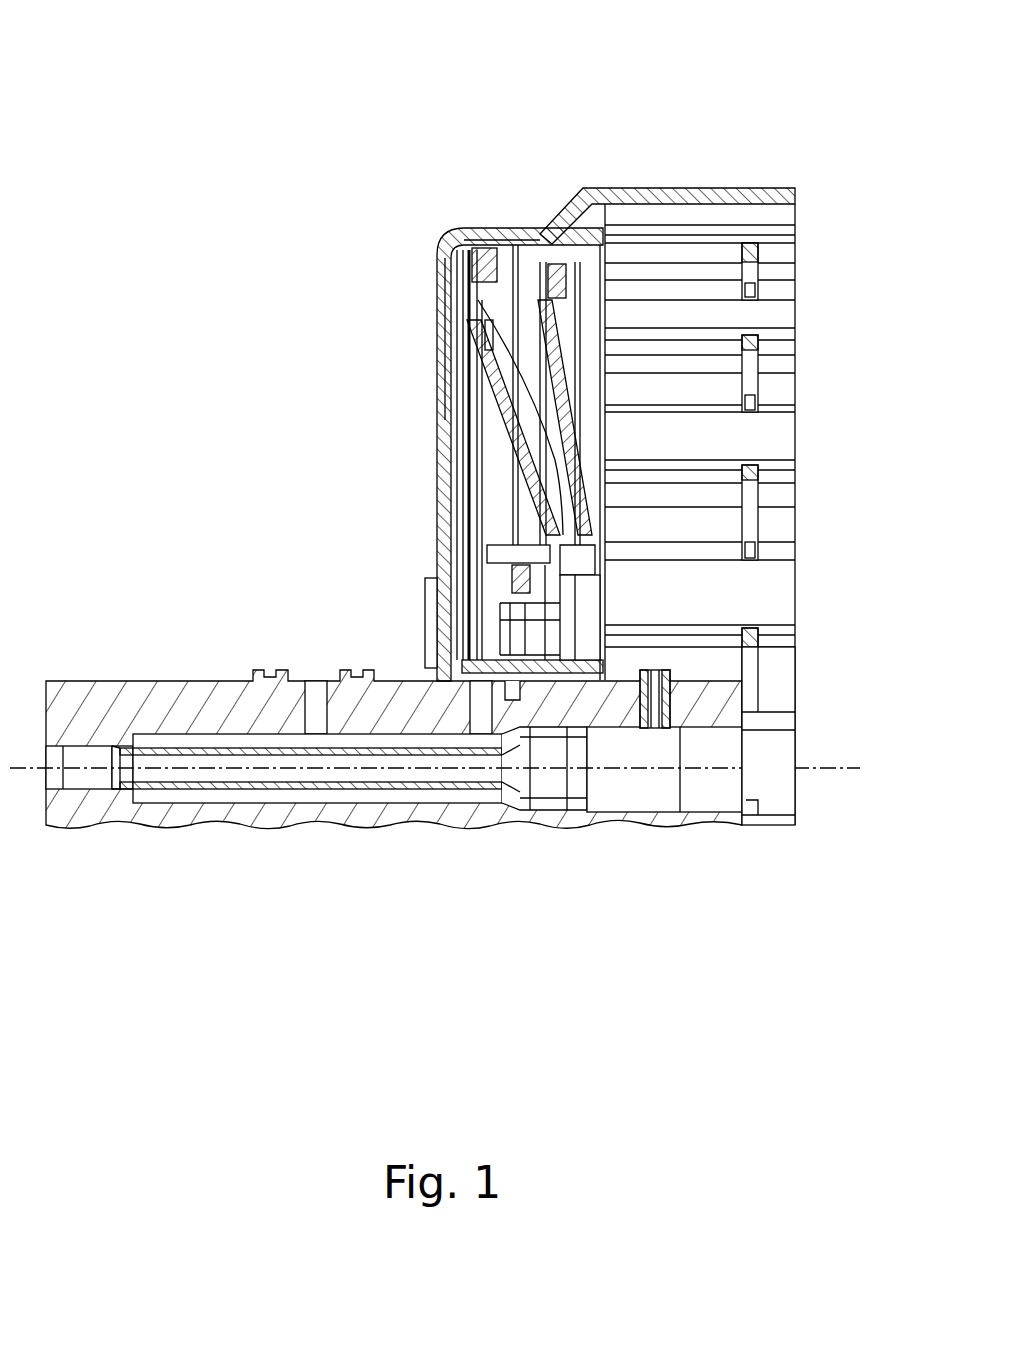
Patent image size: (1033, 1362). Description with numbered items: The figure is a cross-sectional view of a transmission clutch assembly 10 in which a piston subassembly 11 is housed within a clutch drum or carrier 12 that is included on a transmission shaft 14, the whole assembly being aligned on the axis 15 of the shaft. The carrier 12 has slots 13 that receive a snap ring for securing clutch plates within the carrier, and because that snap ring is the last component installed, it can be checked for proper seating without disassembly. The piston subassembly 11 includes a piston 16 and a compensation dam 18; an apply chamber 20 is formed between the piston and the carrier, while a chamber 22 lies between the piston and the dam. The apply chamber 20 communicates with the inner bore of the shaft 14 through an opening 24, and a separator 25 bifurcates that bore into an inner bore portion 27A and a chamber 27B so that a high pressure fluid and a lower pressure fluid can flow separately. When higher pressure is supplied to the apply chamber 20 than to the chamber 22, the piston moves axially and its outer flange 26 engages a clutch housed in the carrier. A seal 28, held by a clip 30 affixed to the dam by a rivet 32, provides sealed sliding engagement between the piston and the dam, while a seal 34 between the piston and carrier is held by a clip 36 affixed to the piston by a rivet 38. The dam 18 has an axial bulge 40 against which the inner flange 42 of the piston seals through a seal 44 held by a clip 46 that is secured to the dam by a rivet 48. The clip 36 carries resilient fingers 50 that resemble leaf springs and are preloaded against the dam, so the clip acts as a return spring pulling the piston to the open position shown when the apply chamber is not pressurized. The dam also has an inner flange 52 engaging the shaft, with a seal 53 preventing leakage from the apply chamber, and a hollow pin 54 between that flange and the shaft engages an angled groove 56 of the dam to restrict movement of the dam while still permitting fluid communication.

The transmission clutch assembly 10 is at (130, 105).
The piston subassembly 11 is at (676, 433).
The clutch drum or carrier 12 is at (447, 253).
The slots 13 is at (745, 262).
The transmission shaft 14 is at (190, 705).
The axis 15 is at (100, 748).
The piston 16 is at (445, 365).
The compensation dam 18 is at (465, 400).
The apply chamber 20 is at (475, 465).
The chamber 22 is at (470, 418).
The opening 24 is at (465, 700).
The separator 25 is at (160, 790).
The outer flange 26 is at (550, 270).
The inner bore portion 27A is at (660, 797).
The inner bore chamber 27B is at (280, 790).
The seal 28 is at (533, 237).
The clip 30 is at (492, 270).
The rivet 32 is at (450, 273).
The seal 34 is at (452, 236).
The clip 36 is at (462, 352).
The rivet 38 is at (443, 335).
The axial bulge 40 is at (598, 605).
The inner flange 42 is at (468, 500).
The seal 44 is at (473, 580).
The clip 46 is at (433, 593).
The rivet 48 is at (430, 635).
The fingers 50 is at (472, 560).
The inner flange 52 is at (592, 676).
The seal 53 is at (500, 690).
The pin 54 is at (672, 735).
The angled groove 56 is at (672, 655).